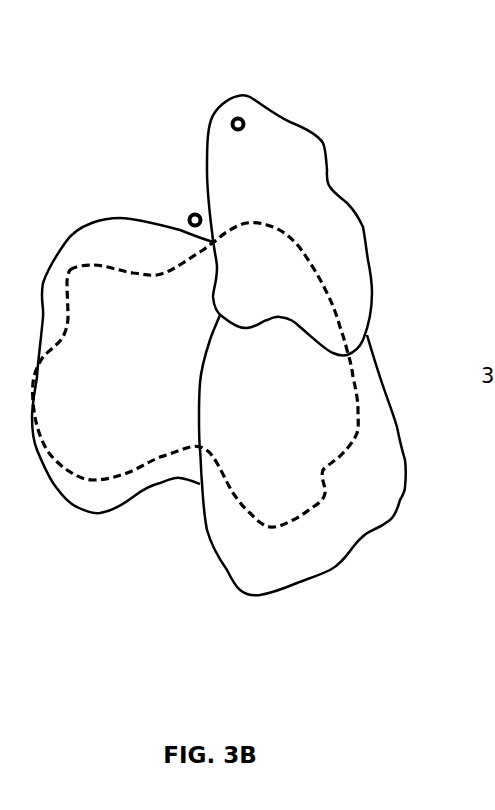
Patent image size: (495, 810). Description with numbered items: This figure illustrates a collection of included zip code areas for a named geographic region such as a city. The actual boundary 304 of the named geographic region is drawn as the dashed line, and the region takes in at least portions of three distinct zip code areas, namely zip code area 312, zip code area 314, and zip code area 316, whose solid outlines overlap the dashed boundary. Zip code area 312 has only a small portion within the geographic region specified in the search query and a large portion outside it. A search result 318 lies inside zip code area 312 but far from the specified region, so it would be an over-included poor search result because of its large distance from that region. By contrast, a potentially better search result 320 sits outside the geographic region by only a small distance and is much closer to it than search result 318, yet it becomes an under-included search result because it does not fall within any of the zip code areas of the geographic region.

The actual boundary 304 is at (305, 253).
The zip code area 312 is at (290, 122).
The zip code area 314 is at (90, 512).
The zip code area 316 is at (405, 465).
The search result 318 is at (240, 116).
The search result 320 is at (195, 211).